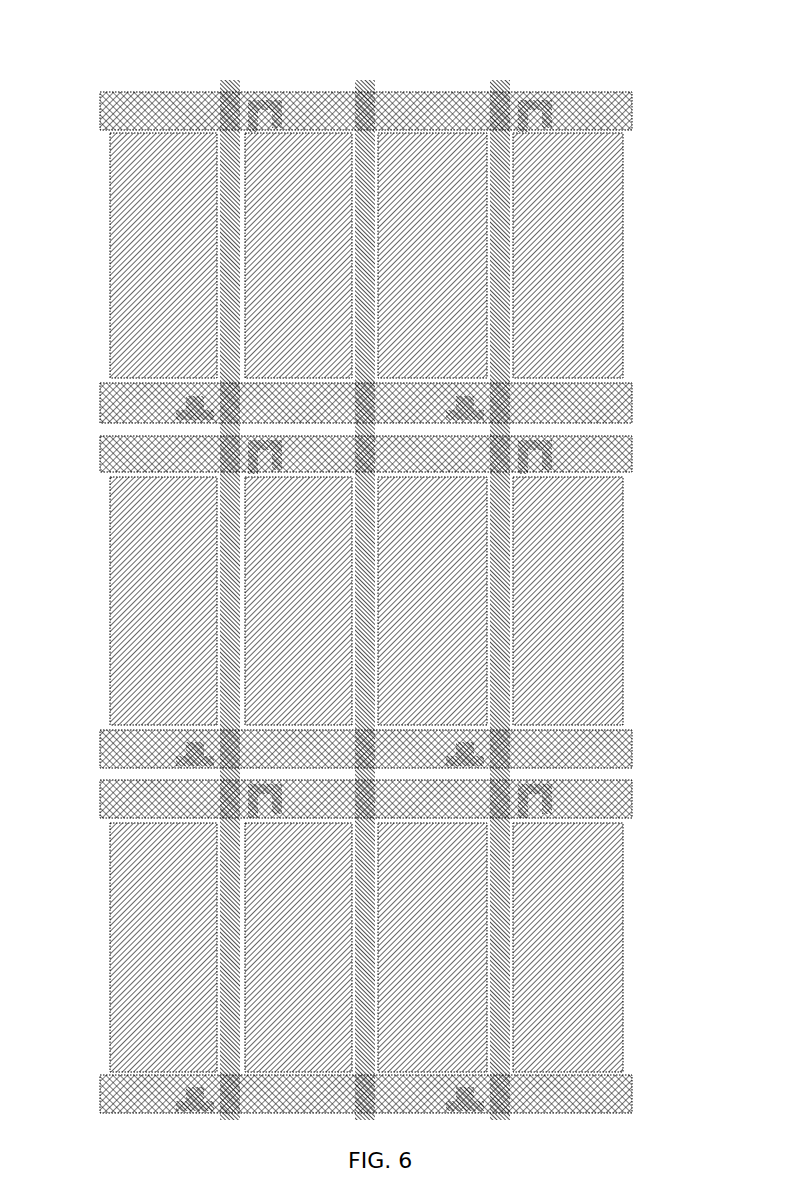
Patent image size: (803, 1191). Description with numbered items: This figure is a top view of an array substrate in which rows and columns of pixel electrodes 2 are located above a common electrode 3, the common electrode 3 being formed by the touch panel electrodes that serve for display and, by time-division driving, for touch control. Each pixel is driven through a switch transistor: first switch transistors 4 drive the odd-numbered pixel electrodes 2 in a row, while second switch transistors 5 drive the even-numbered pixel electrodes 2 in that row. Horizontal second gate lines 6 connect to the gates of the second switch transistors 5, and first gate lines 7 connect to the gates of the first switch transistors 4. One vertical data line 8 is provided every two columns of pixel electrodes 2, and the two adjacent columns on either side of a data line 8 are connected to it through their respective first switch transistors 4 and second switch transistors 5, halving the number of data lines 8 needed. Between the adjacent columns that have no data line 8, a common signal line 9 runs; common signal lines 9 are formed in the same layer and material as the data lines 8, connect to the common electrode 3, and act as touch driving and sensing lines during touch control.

The pixel electrode 2 is at (592, 592).
The common electrode 3 is at (100, 530).
The first switch transistor 4 is at (182, 403).
The second switch transistor 5 is at (258, 453).
The second gate line 6 is at (617, 452).
The first gate line 7 is at (617, 746).
The data line 8 is at (229, 106).
The common signal line 9 is at (364, 102).